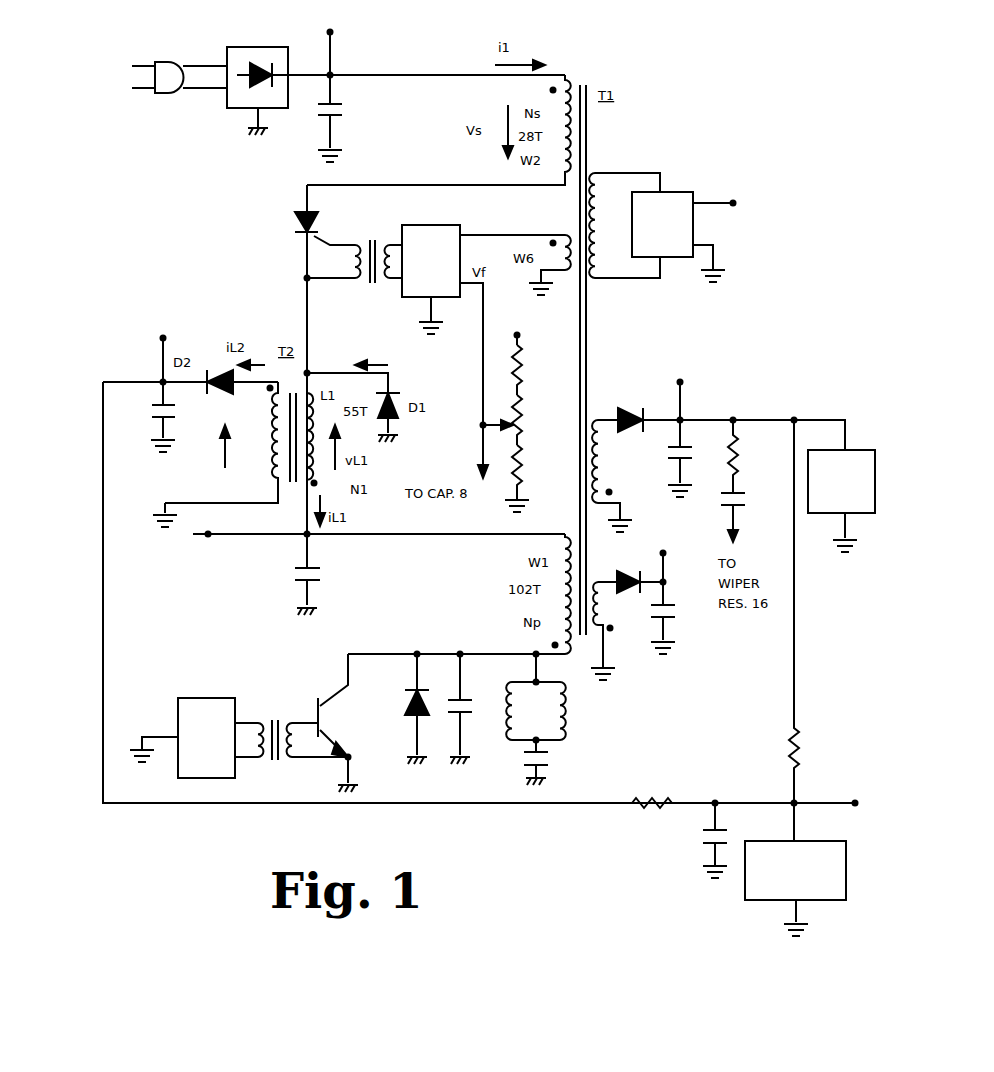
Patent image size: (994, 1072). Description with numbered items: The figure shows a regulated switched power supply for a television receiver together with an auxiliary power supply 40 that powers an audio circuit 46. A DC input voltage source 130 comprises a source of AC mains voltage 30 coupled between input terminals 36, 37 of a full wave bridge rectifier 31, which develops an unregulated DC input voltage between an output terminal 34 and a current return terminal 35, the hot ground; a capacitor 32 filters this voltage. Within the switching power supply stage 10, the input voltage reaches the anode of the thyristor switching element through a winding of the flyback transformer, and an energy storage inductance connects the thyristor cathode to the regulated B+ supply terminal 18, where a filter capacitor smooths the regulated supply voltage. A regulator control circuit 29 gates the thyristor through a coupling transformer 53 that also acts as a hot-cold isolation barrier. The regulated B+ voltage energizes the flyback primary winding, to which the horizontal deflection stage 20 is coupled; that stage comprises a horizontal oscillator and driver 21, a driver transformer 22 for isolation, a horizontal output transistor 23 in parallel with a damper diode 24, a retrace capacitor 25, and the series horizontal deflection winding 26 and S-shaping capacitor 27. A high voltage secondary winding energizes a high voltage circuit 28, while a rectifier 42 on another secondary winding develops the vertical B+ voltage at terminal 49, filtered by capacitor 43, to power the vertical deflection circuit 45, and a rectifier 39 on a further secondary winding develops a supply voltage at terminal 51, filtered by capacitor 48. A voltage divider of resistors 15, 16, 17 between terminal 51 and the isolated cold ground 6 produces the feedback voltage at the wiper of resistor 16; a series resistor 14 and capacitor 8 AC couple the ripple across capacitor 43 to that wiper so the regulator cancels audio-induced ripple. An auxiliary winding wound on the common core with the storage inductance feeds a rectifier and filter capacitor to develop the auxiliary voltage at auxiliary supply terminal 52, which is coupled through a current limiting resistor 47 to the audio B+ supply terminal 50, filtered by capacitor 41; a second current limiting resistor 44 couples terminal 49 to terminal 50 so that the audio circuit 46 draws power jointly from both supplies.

The source of AC mains voltage 30 is at (160, 60).
The input terminal 36 is at (200, 64).
The input terminal 37 is at (220, 92).
The full wave bridge rectifier 31 is at (245, 47).
The current return terminal 35 is at (246, 133).
The DC input voltage source 130 is at (249, 183).
The output terminal 34 is at (327, 70).
The capacitor 32 is at (342, 105).
The high voltage circuit 28 is at (668, 192).
The switching power supply stage 10 is at (324, 359).
The coupling transformer 53 is at (353, 254).
The regulator control circuit 29 is at (440, 225).
The terminal 51 is at (515, 333).
The resistor 15 is at (523, 372).
The resistor 16 is at (523, 419).
The resistor 17 is at (524, 464).
The ground reference potential 6 is at (532, 506).
The resistor 14 is at (309, 372).
The auxiliary power supply 40 is at (197, 442).
The auxiliary supply terminal 52 is at (158, 378).
The regulated B+ supply terminal 18 is at (304, 538).
The horizontal oscillator and driver 21 is at (186, 698).
The driver transformer 22 is at (291, 725).
The horizontal output transistor 23 is at (328, 716).
The horizontal deflection stage 20 is at (626, 722).
The damper diode 24 is at (405, 714).
The retrace capacitor 25 is at (465, 712).
The horizontal deflection winding 26 is at (566, 708).
The S-shaping capacitor 27 is at (550, 762).
The rectifier 42 is at (630, 405).
The terminal 49 is at (676, 380).
The capacitor 43 is at (692, 456).
The capacitor 8 is at (748, 497).
The vertical deflection circuit 45 is at (850, 450).
The rectifier 39 is at (620, 576).
The capacitor 48 is at (674, 616).
The current limiting resistor 44 is at (786, 732).
The current limiting resistor 47 is at (640, 795).
The filter capacitor 41 is at (720, 832).
The audio B+ supply terminal 50 is at (796, 800).
The audio circuit 46 is at (770, 905).